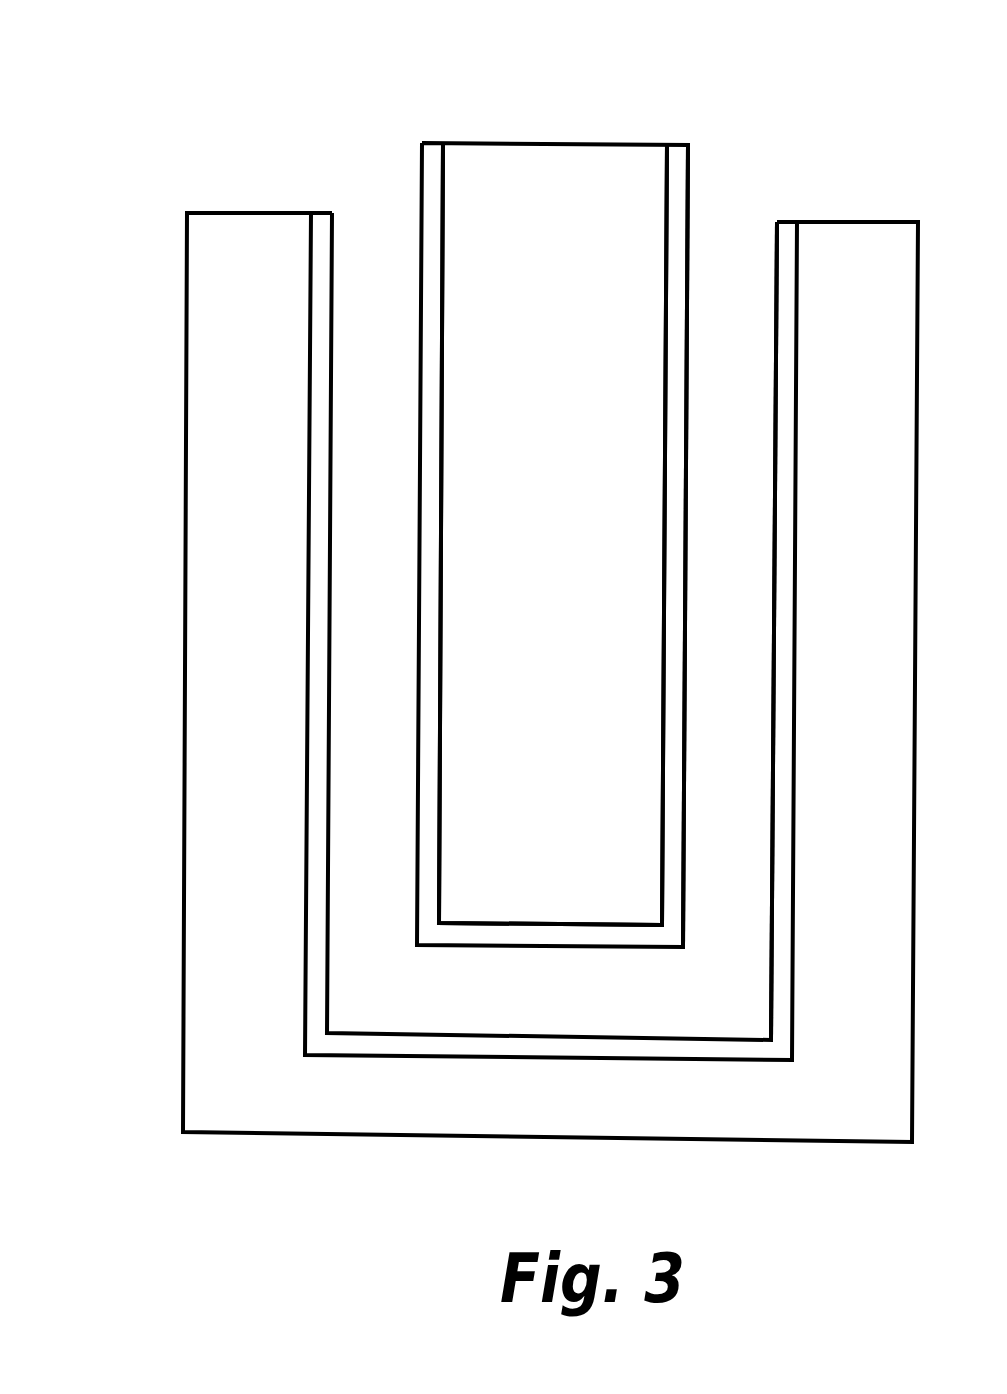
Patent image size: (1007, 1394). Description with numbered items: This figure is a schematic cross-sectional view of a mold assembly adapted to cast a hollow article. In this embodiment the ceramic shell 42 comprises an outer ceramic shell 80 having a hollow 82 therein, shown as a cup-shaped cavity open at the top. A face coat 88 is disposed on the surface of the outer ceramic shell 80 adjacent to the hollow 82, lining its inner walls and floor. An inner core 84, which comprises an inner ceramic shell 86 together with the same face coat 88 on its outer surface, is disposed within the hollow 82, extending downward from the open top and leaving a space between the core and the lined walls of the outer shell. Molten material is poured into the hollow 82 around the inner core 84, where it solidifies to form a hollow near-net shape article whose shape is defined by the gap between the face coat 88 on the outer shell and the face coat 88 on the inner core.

The ceramic shell 42 is at (488, 38).
The outer ceramic shell 80 is at (237, 440).
The hollow 82 is at (551, 636).
The inner core 84 is at (552, 519).
The inner ceramic shell 86 is at (553, 534).
The face coat 88 is at (690, 188).